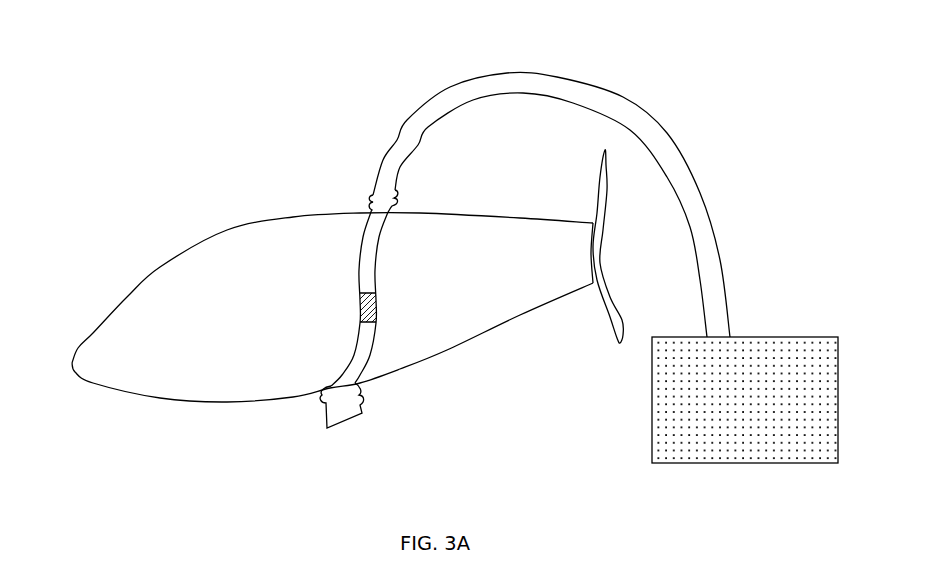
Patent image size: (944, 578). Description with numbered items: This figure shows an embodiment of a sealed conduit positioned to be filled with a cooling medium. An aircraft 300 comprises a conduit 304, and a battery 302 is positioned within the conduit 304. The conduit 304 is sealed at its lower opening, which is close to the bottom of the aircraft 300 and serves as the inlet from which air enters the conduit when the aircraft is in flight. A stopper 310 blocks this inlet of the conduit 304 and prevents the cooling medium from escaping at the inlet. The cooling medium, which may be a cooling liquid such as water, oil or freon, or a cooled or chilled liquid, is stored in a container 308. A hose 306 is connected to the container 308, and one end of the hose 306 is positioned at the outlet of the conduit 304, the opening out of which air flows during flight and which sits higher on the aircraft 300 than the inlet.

The aircraft 300 is at (122, 302).
The battery 302 is at (362, 267).
The conduit 304 is at (361, 315).
The hose 306 is at (427, 132).
The container 308 is at (658, 415).
The stopper 310 is at (340, 416).